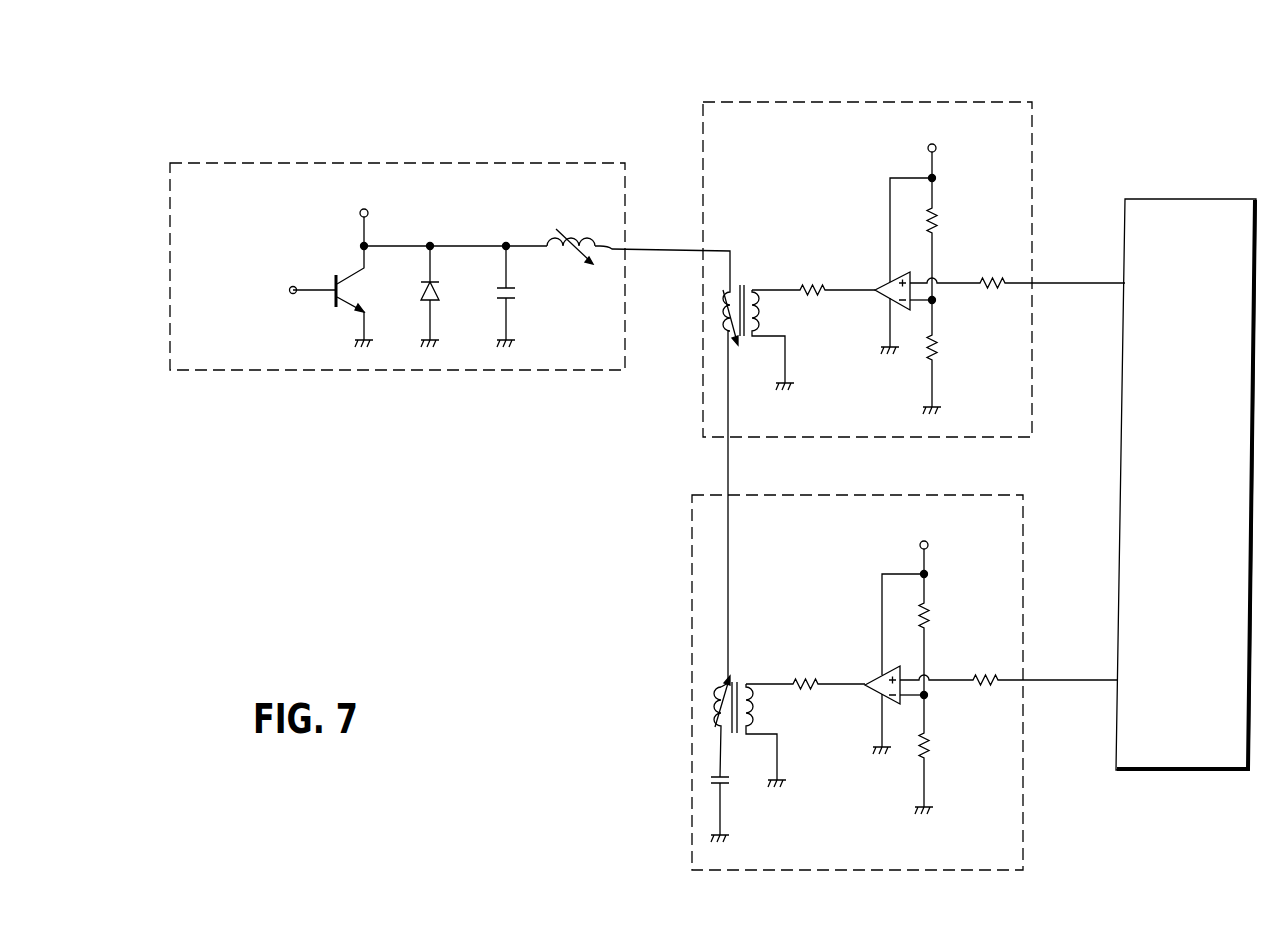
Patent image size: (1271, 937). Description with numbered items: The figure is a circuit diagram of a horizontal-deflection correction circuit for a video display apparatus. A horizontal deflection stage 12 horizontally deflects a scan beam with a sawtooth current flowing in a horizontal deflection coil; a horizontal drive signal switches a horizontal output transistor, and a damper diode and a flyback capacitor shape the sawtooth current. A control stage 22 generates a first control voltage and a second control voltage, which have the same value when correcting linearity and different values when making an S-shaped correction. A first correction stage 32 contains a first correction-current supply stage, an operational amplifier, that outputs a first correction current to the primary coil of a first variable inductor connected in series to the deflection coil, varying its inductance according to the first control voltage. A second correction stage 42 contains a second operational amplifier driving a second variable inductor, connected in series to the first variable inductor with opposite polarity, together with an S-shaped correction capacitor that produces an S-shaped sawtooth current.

The horizontal deflection stage 12 is at (398, 162).
The control stage 22 is at (1191, 198).
The first correction stage 32 is at (869, 101).
The second correction stage 42 is at (690, 682).